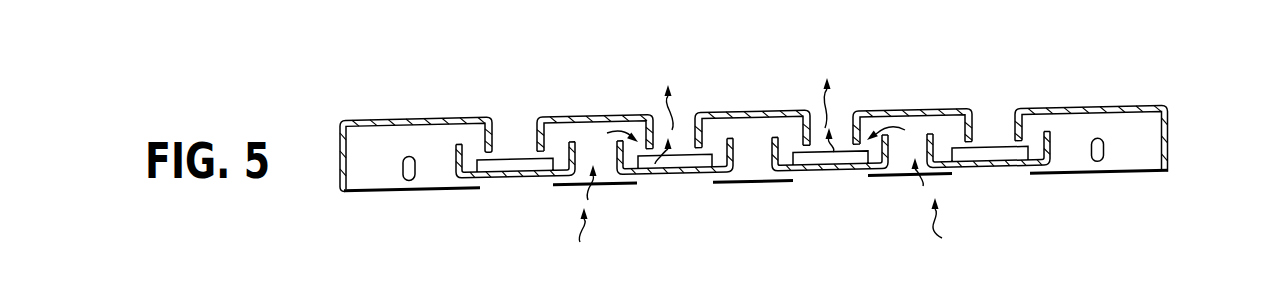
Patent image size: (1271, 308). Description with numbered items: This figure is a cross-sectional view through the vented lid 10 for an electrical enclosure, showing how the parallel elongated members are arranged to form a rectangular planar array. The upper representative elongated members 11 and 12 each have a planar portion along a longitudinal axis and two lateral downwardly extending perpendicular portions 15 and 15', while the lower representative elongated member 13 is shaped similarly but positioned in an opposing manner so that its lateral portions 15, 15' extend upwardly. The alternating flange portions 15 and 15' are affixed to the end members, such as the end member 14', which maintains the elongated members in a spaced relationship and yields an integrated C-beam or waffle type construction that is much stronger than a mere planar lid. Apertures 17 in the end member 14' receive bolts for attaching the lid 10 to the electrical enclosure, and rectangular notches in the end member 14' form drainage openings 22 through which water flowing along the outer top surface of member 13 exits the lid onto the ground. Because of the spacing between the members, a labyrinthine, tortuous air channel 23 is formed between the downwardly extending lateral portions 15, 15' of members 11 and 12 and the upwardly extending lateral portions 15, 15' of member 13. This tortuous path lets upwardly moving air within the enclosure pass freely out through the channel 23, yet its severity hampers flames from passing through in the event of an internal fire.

The lid 10 is at (1180, 132).
The elongated member 11 is at (903, 99).
The elongated member 12 is at (747, 102).
The elongated member 13 is at (822, 183).
The end member 14' is at (416, 179).
The lateral portion 15 is at (895, 182).
The lateral portion 15' is at (757, 185).
The aperture 17 is at (410, 177).
The drainage opening 22 is at (553, 182).
The air channel 23 is at (597, 133).